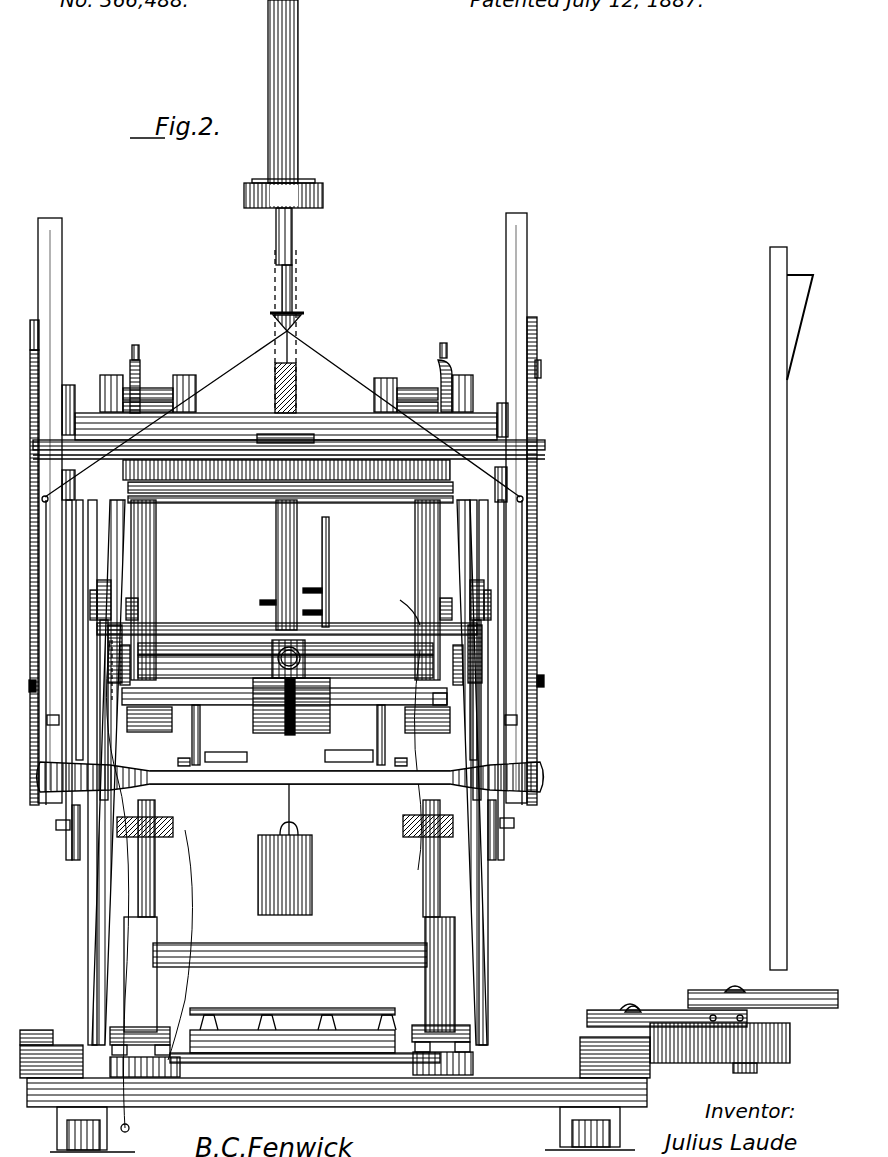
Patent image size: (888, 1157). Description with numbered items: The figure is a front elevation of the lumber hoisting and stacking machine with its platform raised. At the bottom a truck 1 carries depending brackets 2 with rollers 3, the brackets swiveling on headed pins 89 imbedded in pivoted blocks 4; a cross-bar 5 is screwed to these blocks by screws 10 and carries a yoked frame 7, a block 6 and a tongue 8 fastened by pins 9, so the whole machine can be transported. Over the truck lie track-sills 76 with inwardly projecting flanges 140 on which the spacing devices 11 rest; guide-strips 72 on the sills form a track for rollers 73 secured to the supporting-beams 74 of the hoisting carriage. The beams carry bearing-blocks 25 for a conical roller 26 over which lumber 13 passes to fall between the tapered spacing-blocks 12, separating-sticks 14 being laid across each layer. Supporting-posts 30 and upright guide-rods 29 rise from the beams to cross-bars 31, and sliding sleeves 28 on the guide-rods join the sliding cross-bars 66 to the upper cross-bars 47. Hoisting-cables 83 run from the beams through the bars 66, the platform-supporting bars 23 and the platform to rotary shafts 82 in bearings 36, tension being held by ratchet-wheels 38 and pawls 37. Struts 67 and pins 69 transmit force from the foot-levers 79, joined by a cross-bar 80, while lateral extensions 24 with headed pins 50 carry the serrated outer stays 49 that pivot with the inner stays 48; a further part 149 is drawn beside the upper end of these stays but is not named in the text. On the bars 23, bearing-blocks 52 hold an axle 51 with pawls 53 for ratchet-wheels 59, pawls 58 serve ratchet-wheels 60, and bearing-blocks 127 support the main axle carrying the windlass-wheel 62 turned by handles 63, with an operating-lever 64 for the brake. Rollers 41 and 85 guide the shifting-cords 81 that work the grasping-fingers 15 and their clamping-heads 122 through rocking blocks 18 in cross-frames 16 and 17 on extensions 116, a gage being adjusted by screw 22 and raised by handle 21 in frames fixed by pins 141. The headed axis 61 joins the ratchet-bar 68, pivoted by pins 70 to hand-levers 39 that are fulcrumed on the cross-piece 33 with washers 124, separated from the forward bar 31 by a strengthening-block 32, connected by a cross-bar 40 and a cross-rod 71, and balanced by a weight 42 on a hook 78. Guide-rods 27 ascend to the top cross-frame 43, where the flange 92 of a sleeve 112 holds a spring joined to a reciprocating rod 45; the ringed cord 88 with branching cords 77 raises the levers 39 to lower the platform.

The truck 1 is at (456, 1085).
The brackets 2 is at (620, 1115).
The rollers 3 is at (338, 1135).
The pivoted blocks 4 is at (335, 1057).
The cross-bar 5 is at (610, 1012).
The block 6 is at (745, 1040).
The yoked frame 7 is at (655, 1010).
The tongue 8 is at (763, 627).
The pins 9 is at (735, 978).
The screws 10 is at (680, 999).
The spacing devices 11 is at (292, 1041).
The spacing-blocks 12 is at (262, 1007).
The lumber 13 is at (298, 890).
The separating-sticks 14 is at (208, 1007).
The grasping-fingers 15 is at (200, 722).
The cross-frame 16 is at (284, 695).
The cross-frame 17 is at (285, 667).
The rocking blocks 18 is at (355, 645).
The handle 21 is at (288, 659).
The screw 22 is at (330, 722).
The platform-supporting bars 23 is at (288, 720).
The lateral extensions 24 is at (288, 630).
The bearing-blocks 25 is at (440, 974).
The conical roller 26 is at (275, 974).
The guide-rods 27 is at (283, 538).
The reciprocatory sleeves 28 is at (162, 795).
The upright guide-rods 29 is at (423, 886).
The supporting-posts 30 is at (289, 772).
The cross-bars 31 is at (286, 470).
The strengthening-block 32 is at (263, 432).
The cross-piece 33 is at (286, 426).
The bearings 36 is at (475, 362).
The pawls 37 is at (453, 365).
The ratchet-wheels 38 is at (452, 333).
The hand-levers 39 is at (560, 558).
The cross-bar 40 is at (268, 786).
The roller 41 is at (295, 790).
The weight 42 is at (258, 895).
The top cross-frame 43 is at (283, 195).
The reciprocating rod 45 is at (292, 290).
The cross-bars 47 is at (290, 494).
The inner stays 48 is at (522, 848).
The serrated outer stays 49 is at (516, 833).
The headed pins 50 is at (555, 705).
The axle 51 is at (555, 650).
The bearing-blocks 52 is at (420, 690).
The pawls 53 is at (480, 570).
The pawls 58 is at (445, 588).
The ratchet-wheels 59 is at (490, 600).
The ratchet-wheels 60 is at (409, 609).
The headed axis 61 is at (555, 681).
The windlass-wheel 62 is at (264, 596).
The handles 63 is at (310, 588).
The operating-lever 64 is at (329, 548).
The sliding cross-bars 66 is at (380, 845).
The struts 67 is at (485, 850).
The ratchet-bar 68 is at (555, 395).
The pins 69 is at (546, 804).
The pins 70 is at (555, 370).
The cross-rod 71 is at (530, 446).
The guide-strips 72 is at (480, 1062).
The rollers 73 is at (485, 1047).
The supporting-beams 74 is at (290, 1035).
The track-sills 76 is at (297, 1068).
The branching cords 77 is at (337, 373).
The hook 78 is at (292, 818).
The foot-levers 79 is at (490, 883).
The cross-bar 80 is at (368, 625).
The shifting-cords 81 is at (113, 765).
The rotary shafts 82 is at (415, 378).
The hoisting-cables 83 is at (280, 409).
The roller 85 is at (109, 670).
The ringed cord 88 is at (296, 336).
The headed pins 89 is at (585, 1037).
The flange 92 is at (300, 182).
The tubular upright or sleeve 112 is at (298, 68).
The extensions 116 is at (433, 703).
The clamping-heads 122 is at (287, 754).
The washers 124 is at (500, 395).
The bearing-blocks 127 is at (297, 665).
The flanges 140 is at (175, 1067).
The pins 141 is at (350, 690).
The rod 149 is at (74, 478).